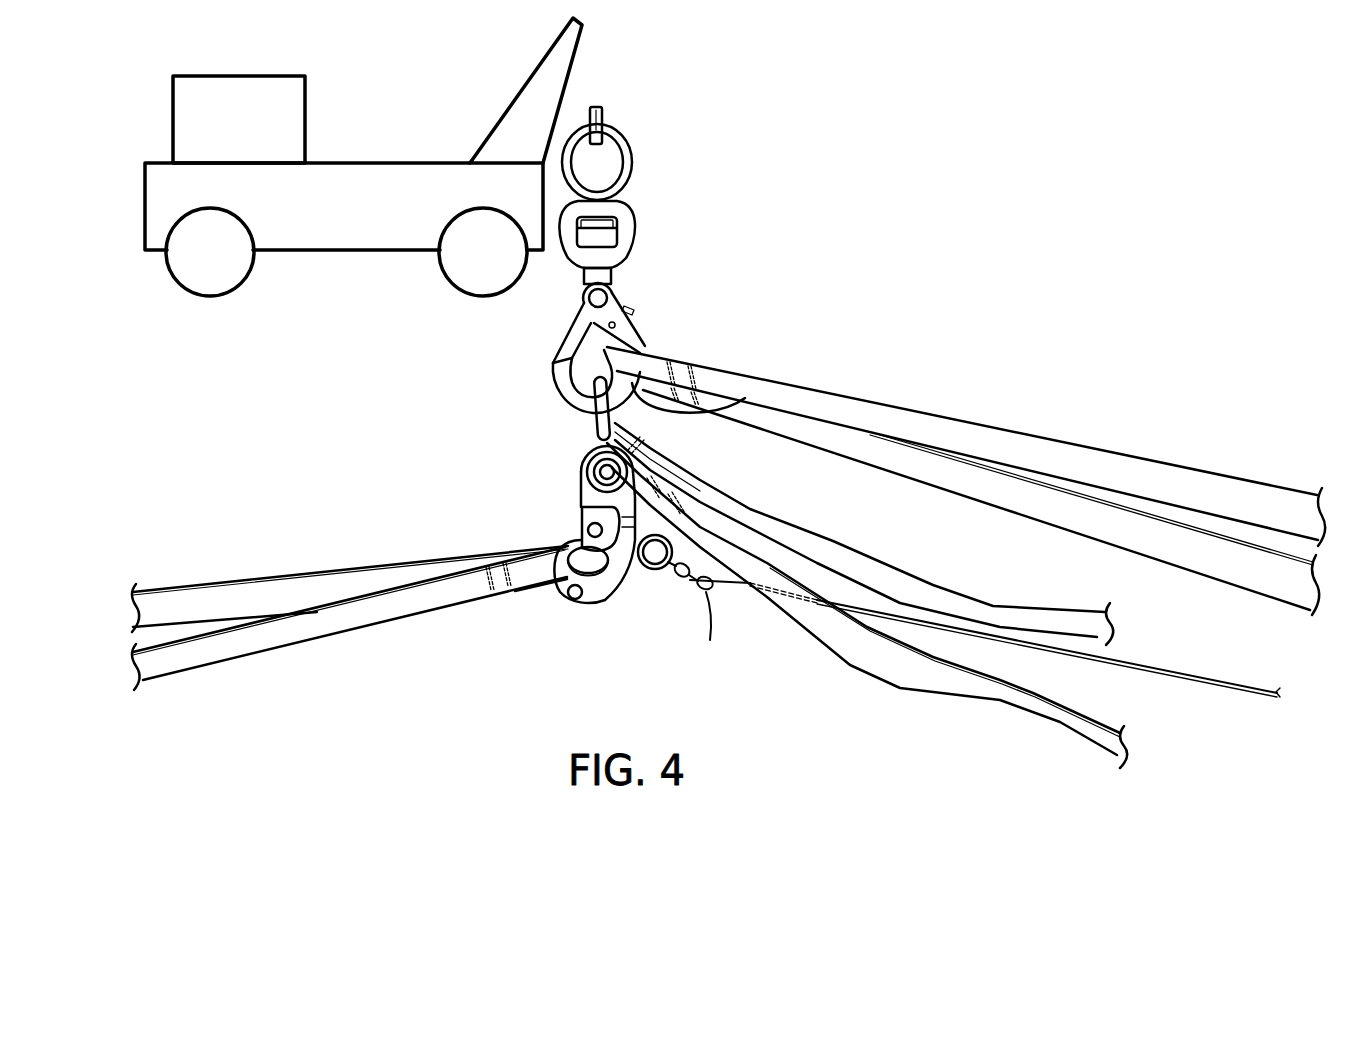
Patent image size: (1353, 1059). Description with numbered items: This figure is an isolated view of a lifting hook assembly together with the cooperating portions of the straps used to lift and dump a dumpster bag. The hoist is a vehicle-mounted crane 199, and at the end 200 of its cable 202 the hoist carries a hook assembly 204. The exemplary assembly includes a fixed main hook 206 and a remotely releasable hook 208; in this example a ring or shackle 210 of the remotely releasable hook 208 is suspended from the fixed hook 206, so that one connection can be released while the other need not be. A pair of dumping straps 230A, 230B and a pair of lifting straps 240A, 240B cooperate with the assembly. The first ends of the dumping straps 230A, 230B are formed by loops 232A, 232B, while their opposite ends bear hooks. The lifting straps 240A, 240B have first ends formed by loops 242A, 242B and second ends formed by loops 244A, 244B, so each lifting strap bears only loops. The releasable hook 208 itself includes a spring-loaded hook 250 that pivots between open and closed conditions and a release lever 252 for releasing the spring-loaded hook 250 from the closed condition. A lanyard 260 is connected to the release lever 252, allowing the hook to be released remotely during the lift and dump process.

The crane 199 is at (392, 300).
The end 200 is at (614, 127).
The cable 202 is at (638, 103).
The hook assembly 204 is at (697, 222).
The fixed main hook 206 is at (557, 401).
The remotely releasable hook 208 is at (585, 628).
The ring or shackle 210 is at (598, 410).
The dumping strap 230A is at (900, 667).
The dumping strap 230B is at (995, 612).
The loop 232A is at (659, 465).
The loop 232B is at (667, 436).
The lifting strap 240A is at (1028, 456).
The lifting strap 240B is at (1203, 550).
The loop 242A is at (665, 342).
The loop 242B is at (657, 403).
The loop 244A is at (527, 590).
The loop 244B is at (539, 605).
The spring-loaded hook 250 is at (560, 545).
The release lever 252 is at (650, 569).
The lanyard 260 is at (1187, 677).